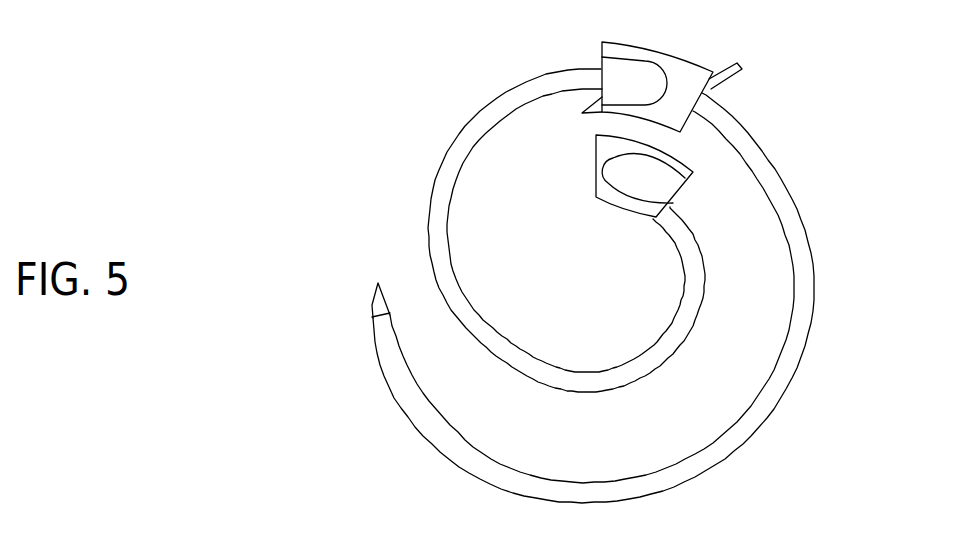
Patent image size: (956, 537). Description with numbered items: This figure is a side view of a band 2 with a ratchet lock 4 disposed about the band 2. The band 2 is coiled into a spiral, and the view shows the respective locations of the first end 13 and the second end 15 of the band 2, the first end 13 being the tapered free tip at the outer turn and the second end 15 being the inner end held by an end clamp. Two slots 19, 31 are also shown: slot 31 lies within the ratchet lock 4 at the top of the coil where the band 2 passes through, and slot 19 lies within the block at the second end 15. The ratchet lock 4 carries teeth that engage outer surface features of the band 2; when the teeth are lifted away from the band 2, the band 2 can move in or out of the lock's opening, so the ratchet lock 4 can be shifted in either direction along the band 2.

The band 2 is at (406, 121).
The ratchet lock 4 is at (683, 80).
The first end 13 is at (368, 292).
The second end 15 is at (595, 170).
The slot 19 is at (650, 182).
The slot 31 is at (622, 79).